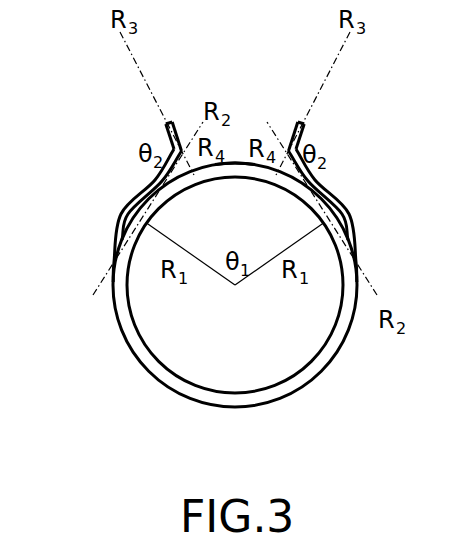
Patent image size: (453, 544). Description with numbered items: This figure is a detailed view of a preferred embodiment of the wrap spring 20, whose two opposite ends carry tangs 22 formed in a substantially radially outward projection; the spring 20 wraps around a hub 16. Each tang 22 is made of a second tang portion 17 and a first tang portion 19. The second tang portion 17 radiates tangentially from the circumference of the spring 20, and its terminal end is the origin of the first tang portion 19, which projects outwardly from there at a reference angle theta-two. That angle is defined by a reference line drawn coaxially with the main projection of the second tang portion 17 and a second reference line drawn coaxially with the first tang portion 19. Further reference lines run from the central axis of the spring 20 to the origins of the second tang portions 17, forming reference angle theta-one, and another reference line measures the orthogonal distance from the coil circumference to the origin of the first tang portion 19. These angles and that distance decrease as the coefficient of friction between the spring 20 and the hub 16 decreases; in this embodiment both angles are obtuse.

The hub 16 is at (298, 342).
The second tang portion 17 is at (119, 224).
The first tang portion 19 is at (163, 128).
The spring 20 is at (237, 170).
The tangs 22 is at (176, 122).